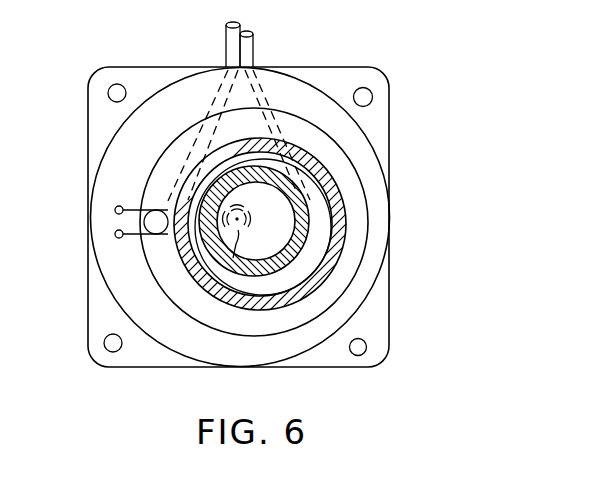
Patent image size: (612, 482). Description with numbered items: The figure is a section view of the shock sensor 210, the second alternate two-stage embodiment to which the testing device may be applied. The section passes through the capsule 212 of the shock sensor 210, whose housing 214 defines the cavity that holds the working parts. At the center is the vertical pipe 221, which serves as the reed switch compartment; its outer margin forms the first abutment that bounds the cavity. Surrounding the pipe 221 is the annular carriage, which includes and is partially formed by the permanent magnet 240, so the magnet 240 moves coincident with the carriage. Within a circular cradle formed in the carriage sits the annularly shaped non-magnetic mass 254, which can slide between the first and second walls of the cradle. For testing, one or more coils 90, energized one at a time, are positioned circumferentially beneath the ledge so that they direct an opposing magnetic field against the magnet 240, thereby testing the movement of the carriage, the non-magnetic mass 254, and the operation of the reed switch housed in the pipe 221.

The shock sensor 210 is at (374, 67).
The capsule 212 is at (390, 122).
The housing 214 is at (390, 160).
The non-magnetic mass 254 is at (337, 208).
The permanent magnet 240 is at (290, 262).
The pipe 221 is at (232, 262).
The coils 90 is at (132, 238).